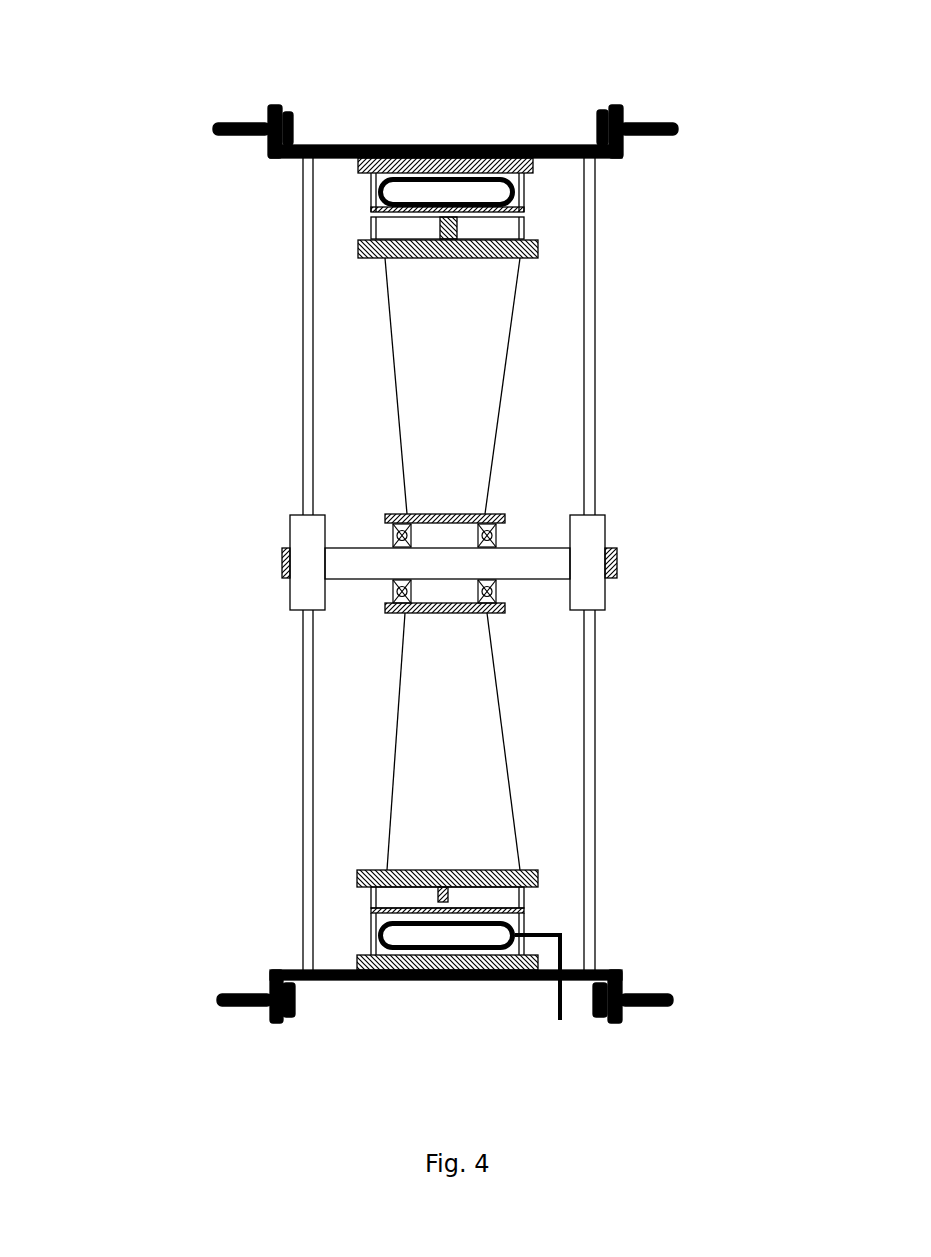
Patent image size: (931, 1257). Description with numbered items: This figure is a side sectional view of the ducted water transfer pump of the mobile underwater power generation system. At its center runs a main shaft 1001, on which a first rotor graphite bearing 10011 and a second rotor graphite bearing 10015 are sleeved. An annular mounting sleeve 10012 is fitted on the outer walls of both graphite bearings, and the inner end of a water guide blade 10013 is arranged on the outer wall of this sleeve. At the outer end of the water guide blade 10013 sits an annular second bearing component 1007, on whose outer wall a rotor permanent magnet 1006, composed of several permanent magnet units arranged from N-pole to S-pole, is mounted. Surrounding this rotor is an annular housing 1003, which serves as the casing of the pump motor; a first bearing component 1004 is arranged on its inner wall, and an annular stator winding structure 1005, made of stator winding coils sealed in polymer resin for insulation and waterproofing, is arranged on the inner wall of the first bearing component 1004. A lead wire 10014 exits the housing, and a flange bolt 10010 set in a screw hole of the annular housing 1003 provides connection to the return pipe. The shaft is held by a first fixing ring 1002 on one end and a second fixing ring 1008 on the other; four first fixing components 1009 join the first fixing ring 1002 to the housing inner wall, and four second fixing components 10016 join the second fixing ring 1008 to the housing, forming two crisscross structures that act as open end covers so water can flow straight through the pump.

The main shaft 1001 is at (282, 562).
The first fixing ring 1002 is at (290, 520).
The annular housing 1003 is at (332, 148).
The first bearing component 1004 is at (403, 150).
The annular stator winding structure 1005 is at (452, 188).
The rotor permanent magnet 1006 is at (510, 230).
The second bearing component 1007 is at (538, 248).
The second fixing ring 1008 is at (597, 537).
The first fixing component 1009 is at (302, 718).
The flange bolt 10010 is at (232, 1005).
The first rotor graphite bearing 10011 is at (395, 590).
The annular mounting sleeve 10012 is at (457, 610).
The water guide blade 10013 is at (473, 777).
The lead wire 10014 is at (552, 1008).
The second rotor graphite bearing 10015 is at (505, 595).
The second fixing component 10016 is at (592, 705).